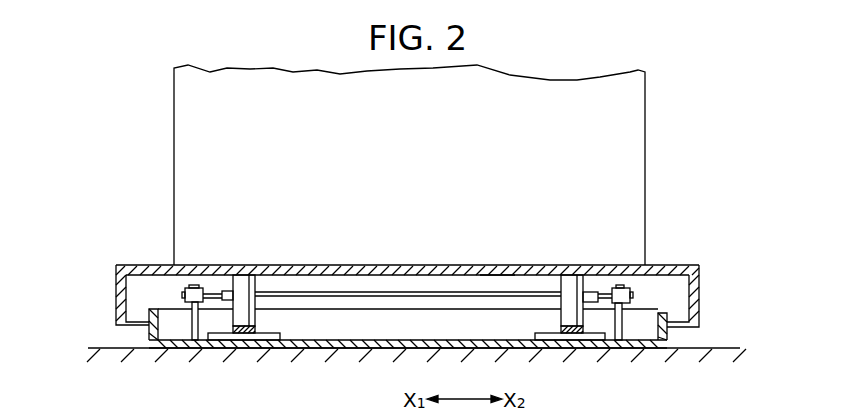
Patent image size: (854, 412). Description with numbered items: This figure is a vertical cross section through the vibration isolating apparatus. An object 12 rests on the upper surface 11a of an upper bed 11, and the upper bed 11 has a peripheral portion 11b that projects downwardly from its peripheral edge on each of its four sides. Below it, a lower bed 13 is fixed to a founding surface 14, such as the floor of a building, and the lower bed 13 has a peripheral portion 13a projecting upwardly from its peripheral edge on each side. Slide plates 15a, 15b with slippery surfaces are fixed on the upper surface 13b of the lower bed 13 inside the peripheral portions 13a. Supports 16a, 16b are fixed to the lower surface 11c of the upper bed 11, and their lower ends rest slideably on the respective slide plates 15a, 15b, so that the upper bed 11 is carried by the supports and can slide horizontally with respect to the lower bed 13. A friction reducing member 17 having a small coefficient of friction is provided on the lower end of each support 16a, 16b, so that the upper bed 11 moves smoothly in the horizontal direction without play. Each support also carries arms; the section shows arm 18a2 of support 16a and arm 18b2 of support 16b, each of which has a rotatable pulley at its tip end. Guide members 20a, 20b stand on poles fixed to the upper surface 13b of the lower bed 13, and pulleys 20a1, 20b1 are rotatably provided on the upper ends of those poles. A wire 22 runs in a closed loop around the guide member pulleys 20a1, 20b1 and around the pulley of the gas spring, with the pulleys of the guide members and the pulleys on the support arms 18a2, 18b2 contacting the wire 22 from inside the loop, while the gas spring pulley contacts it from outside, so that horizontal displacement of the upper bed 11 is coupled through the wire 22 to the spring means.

The upper bed 11 is at (435, 277).
The upper surface 11a is at (342, 265).
The peripheral portion 11b is at (699, 285).
The lower surface 11c is at (497, 265).
The object 12 is at (585, 85).
The lower bed 13 is at (449, 353).
The peripheral portion 13a is at (667, 340).
The upper surface 13b is at (408, 330).
The founding surface 14 is at (110, 347).
The slide plate 15a is at (258, 341).
The slide plate 15b is at (580, 343).
The support 16a is at (254, 320).
The support 16b is at (563, 317).
The friction reducing member 17 is at (241, 333).
The arm 18a2 is at (227, 291).
The arm 18b2 is at (590, 292).
The guide member 20a is at (192, 320).
The pulley 20a1 is at (206, 286).
The guide member 20b is at (623, 322).
The pulley 20b1 is at (632, 287).
The wire 22 is at (445, 292).